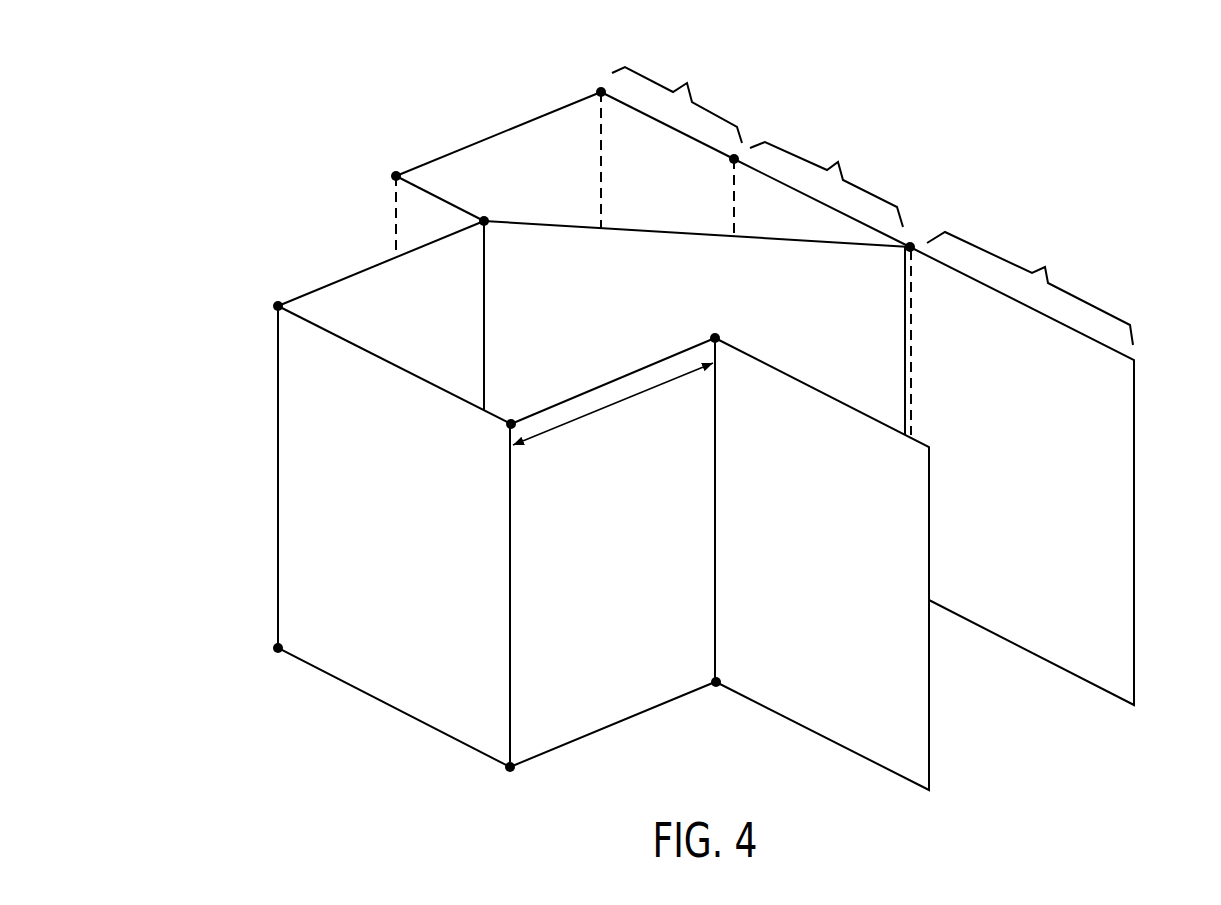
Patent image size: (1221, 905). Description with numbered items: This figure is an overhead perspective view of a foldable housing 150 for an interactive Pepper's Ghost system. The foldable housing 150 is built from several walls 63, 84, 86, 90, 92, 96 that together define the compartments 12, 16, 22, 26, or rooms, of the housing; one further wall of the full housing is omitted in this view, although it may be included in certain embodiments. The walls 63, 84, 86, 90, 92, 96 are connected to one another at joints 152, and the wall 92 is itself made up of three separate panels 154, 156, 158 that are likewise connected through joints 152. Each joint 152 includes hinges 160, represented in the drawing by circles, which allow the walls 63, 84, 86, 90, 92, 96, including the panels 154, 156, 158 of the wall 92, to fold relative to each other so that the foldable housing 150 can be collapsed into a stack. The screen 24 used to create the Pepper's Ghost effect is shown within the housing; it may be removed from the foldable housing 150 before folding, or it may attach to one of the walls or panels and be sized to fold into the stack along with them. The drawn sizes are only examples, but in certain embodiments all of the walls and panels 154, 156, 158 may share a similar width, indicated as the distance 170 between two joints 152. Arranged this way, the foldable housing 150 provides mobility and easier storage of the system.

The compartment 12 is at (1103, 382).
The compartment 16 is at (570, 130).
The compartment 22 is at (750, 195).
The screen 24 is at (613, 224).
The compartment 26 is at (357, 273).
The wall 63 is at (394, 536).
The wall 84 is at (590, 393).
The wall 86 is at (367, 303).
The wall 90 is at (472, 144).
The wall 92 is at (690, 134).
The wall 96 is at (850, 405).
The foldable housing 150 is at (950, 97).
The joint 152 is at (393, 197).
The panel 154 is at (677, 96).
The panel 156 is at (826, 177).
The panel 158 is at (1030, 288).
The hinge 160 is at (597, 91).
The distance 170 is at (615, 403).